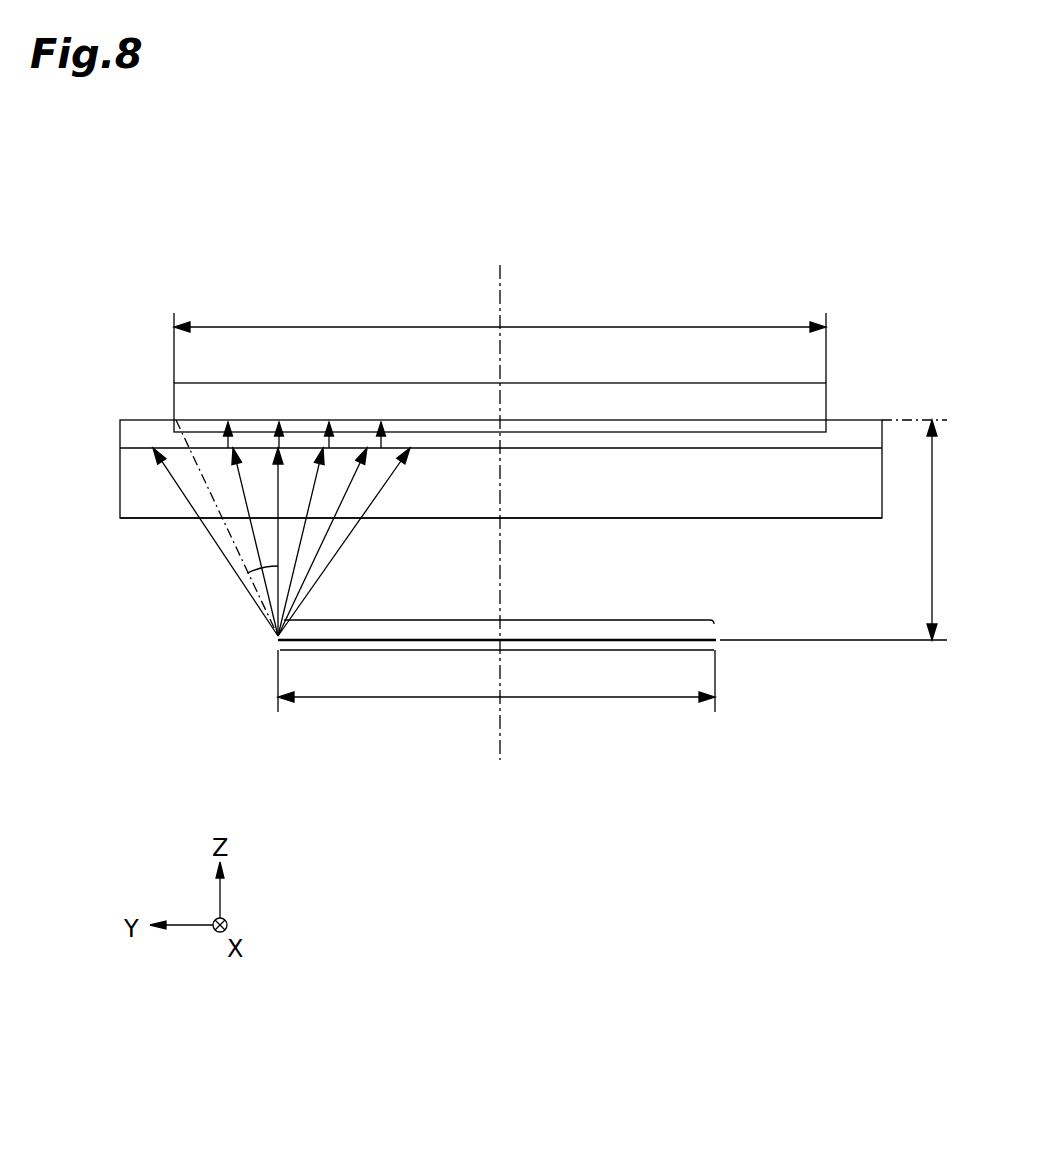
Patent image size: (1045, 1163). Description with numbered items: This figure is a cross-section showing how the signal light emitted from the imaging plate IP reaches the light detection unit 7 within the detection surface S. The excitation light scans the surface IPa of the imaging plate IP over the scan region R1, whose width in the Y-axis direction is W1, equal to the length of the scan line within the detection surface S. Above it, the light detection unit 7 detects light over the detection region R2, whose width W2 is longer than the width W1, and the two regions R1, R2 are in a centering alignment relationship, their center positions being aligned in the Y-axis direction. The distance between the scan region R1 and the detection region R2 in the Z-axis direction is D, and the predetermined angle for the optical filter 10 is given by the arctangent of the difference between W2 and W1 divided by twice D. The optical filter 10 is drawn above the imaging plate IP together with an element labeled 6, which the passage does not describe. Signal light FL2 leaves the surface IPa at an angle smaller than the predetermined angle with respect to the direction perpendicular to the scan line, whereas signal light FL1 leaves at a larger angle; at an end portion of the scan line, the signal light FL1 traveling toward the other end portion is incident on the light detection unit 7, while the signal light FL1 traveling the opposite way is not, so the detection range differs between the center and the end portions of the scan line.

The base plate 6 is at (790, 518).
The light detection unit 7 is at (827, 398).
The optical filter 10 is at (876, 420).
The imaging plate IP is at (718, 650).
The surface of the imaging plate IPa is at (612, 620).
The signal light emitted at an angle larger than the predetermined angle FL1 is at (350, 540).
The signal light emitted at an angle smaller than the predetermined angle FL2 is at (490, 217).
The width of the scan region W1 is at (496, 681).
The width of the detection region W2 is at (500, 340).
The distance between the scan region and the detection region D is at (833, 530).
The scan region of the excitation light R1 is at (534, 621).
The detection region of the signal light R2 is at (534, 441).
The detection surface S is at (574, 556).